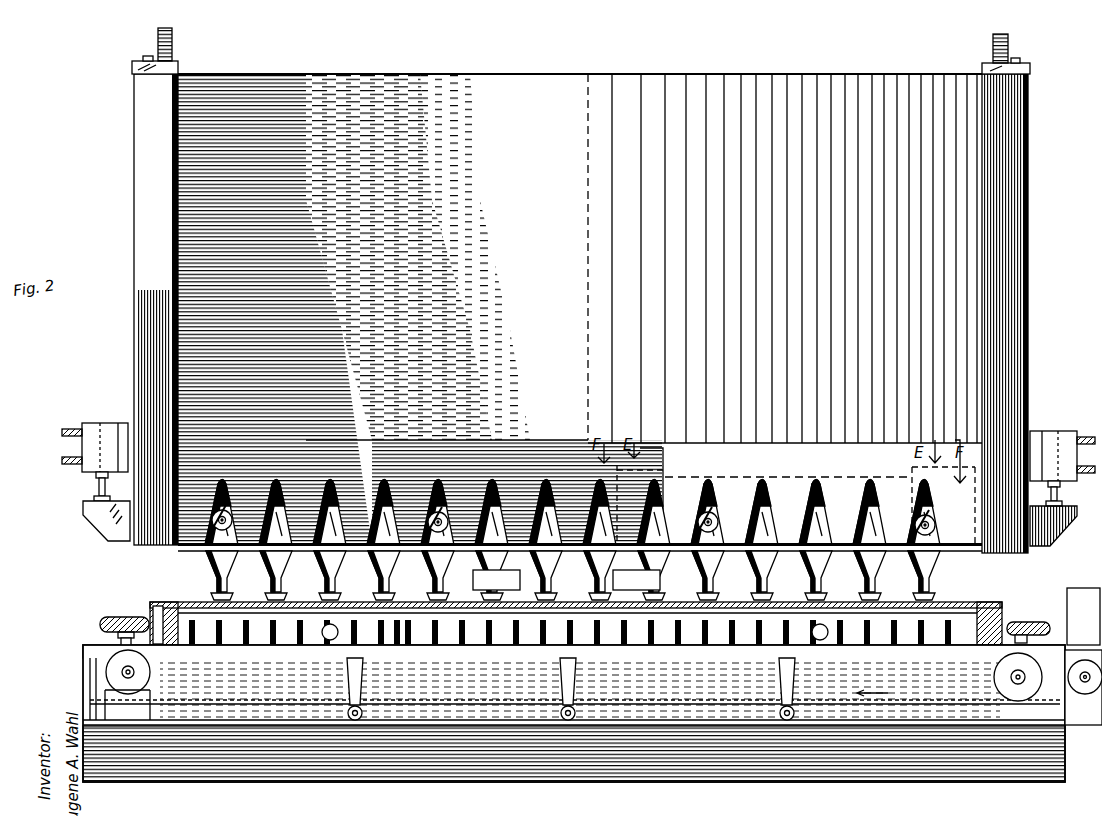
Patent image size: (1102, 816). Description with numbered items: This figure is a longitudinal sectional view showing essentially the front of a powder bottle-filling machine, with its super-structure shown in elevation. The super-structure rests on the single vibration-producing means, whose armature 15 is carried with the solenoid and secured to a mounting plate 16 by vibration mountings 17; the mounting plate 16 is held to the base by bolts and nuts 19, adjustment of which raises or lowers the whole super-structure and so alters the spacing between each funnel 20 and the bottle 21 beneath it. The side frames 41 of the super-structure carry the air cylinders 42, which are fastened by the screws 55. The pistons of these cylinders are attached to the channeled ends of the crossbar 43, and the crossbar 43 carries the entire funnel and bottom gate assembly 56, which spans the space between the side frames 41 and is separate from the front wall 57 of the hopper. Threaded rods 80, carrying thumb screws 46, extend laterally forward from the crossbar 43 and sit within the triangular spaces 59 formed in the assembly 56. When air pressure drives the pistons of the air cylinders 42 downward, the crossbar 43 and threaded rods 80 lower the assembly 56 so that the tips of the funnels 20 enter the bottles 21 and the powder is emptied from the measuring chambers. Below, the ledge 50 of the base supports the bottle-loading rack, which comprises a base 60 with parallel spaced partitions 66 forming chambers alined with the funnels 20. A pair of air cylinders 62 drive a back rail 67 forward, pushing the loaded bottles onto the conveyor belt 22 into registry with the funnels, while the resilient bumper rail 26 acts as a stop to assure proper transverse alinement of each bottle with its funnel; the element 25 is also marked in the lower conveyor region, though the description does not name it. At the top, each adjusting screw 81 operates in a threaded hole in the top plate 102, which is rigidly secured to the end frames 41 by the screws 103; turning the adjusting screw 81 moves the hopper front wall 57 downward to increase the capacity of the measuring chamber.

The armature 15 is at (407, 630).
The mounting plate 16 is at (490, 615).
The vibration mountings 17 is at (464, 614).
The nuts 19 is at (712, 612).
The funnel 20 is at (216, 582).
The bottle 21 is at (211, 595).
The conveyor belt 22 is at (120, 632).
The conveyor frame 25 is at (574, 713).
The resilient bumper rail 26 is at (120, 632).
The side frames 41 is at (136, 183).
The air cylinders 42 is at (82, 447).
The crossbar 43 is at (110, 522).
The thumb screws 46 is at (230, 512).
The ledge 50 is at (100, 622).
The screws 55 is at (104, 423).
The funnel and bottom gate assembly 56 is at (527, 456).
The front wall 57 is at (578, 74).
The triangular spaces 59 is at (284, 498).
The base 60 is at (690, 658).
The air cylinders 62 is at (330, 623).
The partitions 66 is at (770, 650).
The back rail 67 is at (226, 612).
The threaded rods 80 is at (205, 546).
The adjusting screw 81 is at (172, 44).
The top plate 102 is at (134, 66).
The screws 103 is at (147, 56).